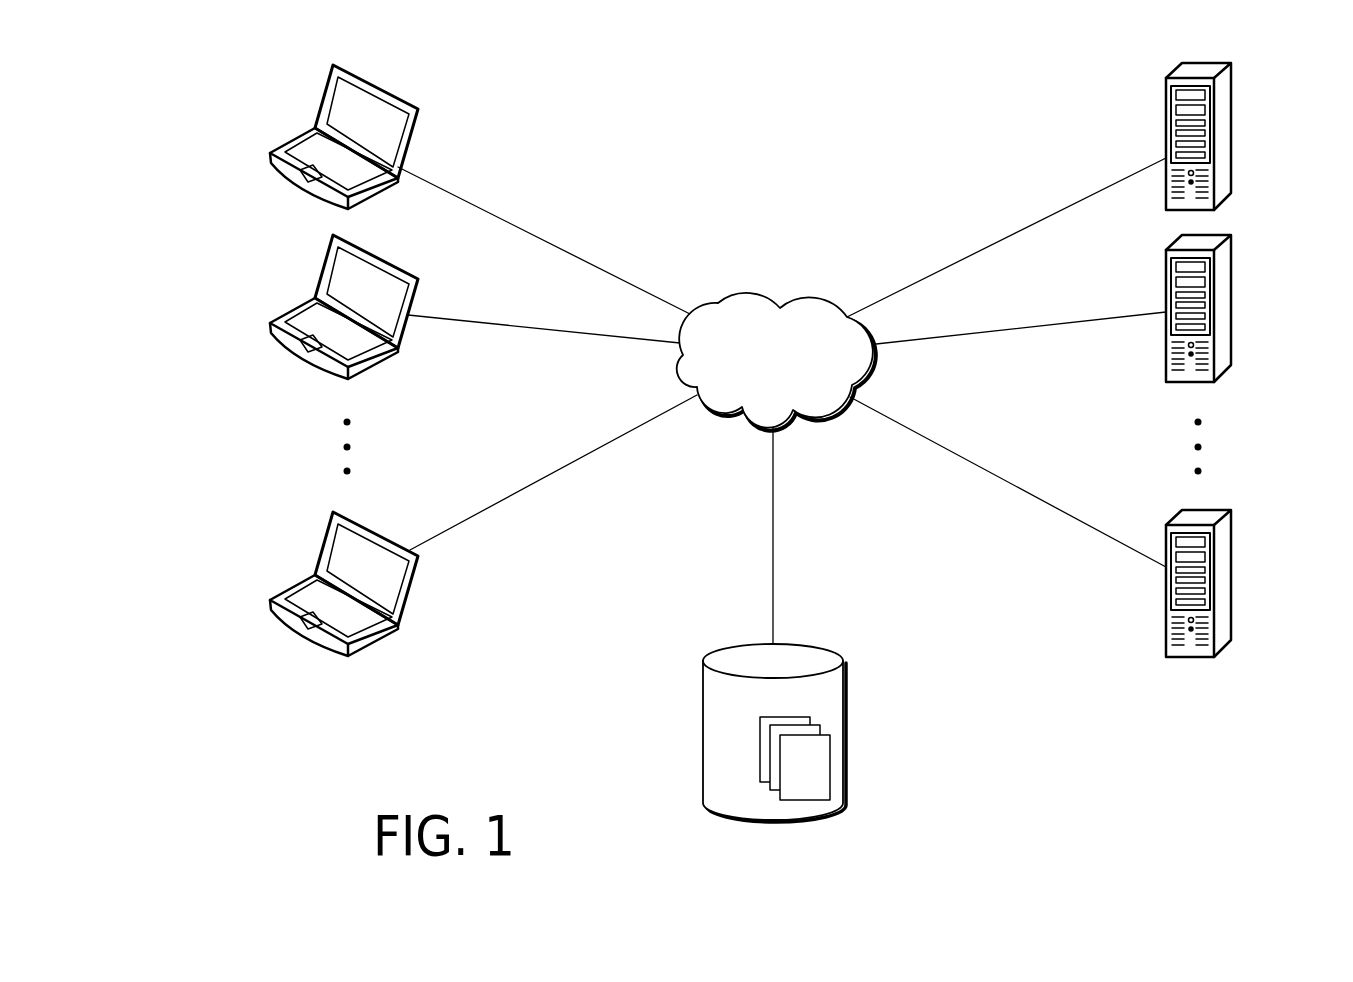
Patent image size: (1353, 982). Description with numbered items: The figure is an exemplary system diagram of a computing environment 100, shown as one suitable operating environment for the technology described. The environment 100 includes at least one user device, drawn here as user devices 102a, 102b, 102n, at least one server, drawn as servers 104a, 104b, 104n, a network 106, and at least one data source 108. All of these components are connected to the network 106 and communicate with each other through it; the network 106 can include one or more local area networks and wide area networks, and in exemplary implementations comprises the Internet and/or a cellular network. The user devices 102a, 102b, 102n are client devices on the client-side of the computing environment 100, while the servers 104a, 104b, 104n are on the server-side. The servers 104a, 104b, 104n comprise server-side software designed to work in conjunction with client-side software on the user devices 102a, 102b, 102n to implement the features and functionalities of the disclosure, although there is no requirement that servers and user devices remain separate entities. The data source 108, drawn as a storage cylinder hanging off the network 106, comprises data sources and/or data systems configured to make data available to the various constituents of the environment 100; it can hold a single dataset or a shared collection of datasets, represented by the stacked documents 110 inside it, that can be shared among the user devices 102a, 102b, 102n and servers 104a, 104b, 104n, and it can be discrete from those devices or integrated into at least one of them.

The computing environment 100 is at (128, 74).
The user device 102a is at (268, 154).
The user device 102b is at (268, 324).
The user device 102n is at (268, 601).
The server 104a is at (1232, 130).
The server 104b is at (1232, 302).
The server 104n is at (1232, 576).
The network 106 is at (753, 370).
The data source 108 is at (703, 723).
The documents 110 is at (830, 763).